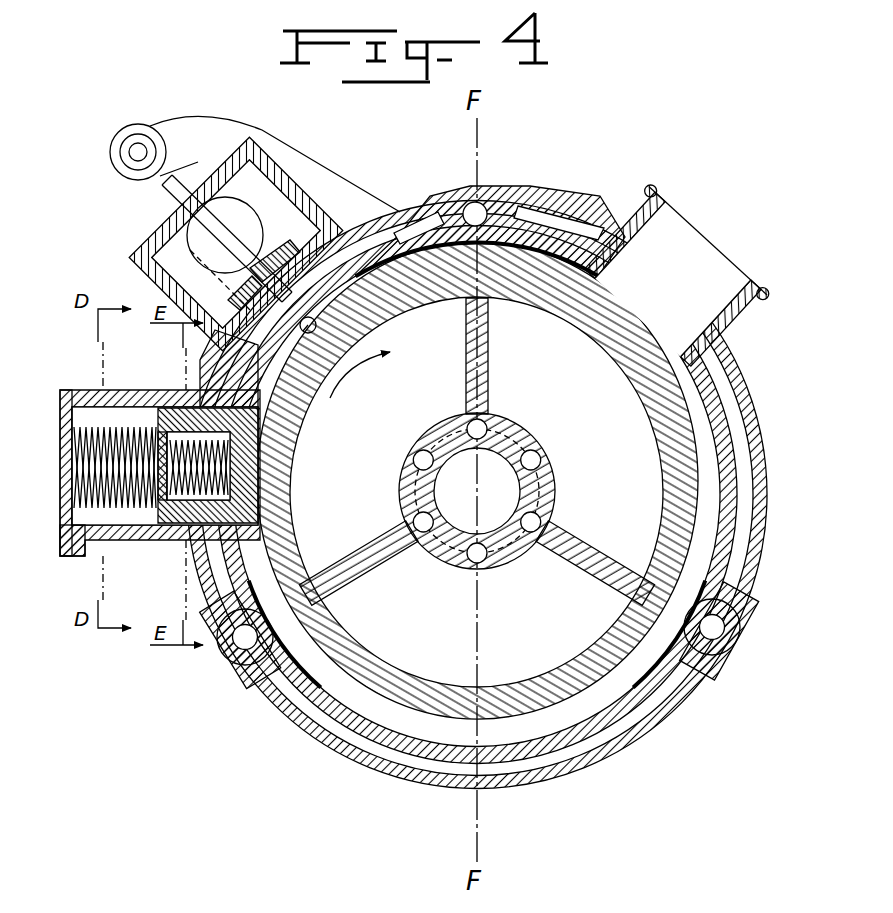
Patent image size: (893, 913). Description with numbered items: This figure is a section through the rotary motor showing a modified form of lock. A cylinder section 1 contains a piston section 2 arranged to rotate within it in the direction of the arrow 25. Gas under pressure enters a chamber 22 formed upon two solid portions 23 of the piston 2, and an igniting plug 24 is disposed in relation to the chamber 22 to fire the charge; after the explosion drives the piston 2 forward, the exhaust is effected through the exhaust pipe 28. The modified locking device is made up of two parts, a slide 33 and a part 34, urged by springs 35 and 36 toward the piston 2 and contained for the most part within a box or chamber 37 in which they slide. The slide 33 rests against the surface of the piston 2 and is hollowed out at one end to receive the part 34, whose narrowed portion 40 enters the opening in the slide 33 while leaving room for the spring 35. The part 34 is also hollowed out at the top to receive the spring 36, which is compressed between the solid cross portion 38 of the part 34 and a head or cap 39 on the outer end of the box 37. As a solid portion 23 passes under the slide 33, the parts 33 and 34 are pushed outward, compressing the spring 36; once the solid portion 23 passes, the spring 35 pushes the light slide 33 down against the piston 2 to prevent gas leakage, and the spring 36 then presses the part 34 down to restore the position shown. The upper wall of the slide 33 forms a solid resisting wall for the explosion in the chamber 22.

The cylinder section 1 is at (483, 487).
The piston section 2 is at (668, 443).
The chamber 22 is at (477, 495).
The solid portions 23 is at (292, 685).
The igniting plug 24 is at (305, 334).
The arrow 25 is at (360, 375).
The exhaust pipe 28 is at (674, 278).
The slide 33 is at (238, 352).
The part 34 is at (165, 408).
The spring 35 is at (185, 524).
The spring 36 is at (96, 395).
The box or chamber 37 is at (120, 410).
The solid cross portion 38 is at (130, 542).
The head or cap 39 is at (68, 550).
The narrowed portion 40 is at (227, 498).